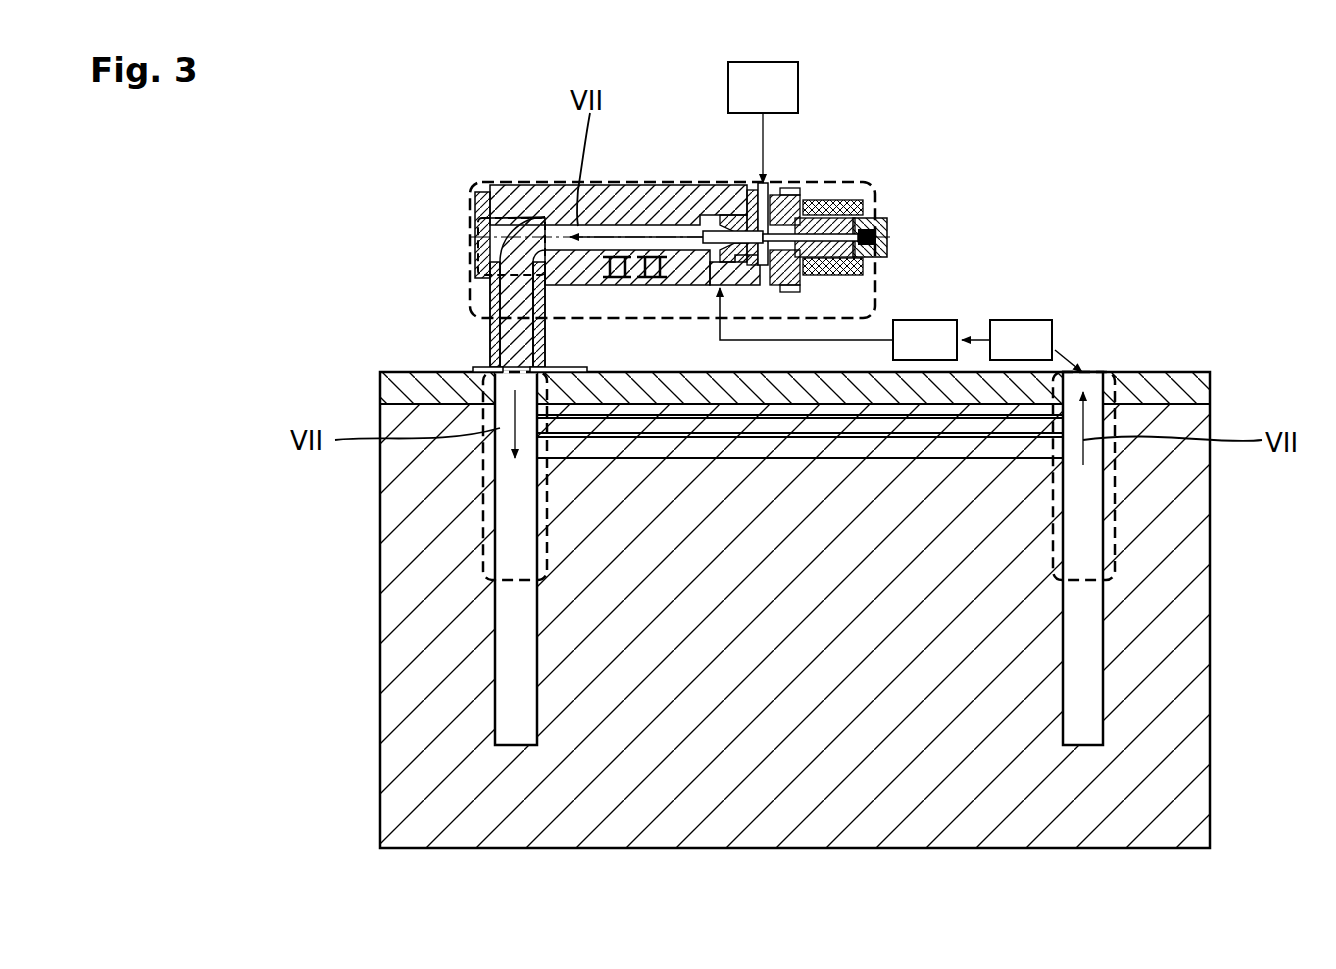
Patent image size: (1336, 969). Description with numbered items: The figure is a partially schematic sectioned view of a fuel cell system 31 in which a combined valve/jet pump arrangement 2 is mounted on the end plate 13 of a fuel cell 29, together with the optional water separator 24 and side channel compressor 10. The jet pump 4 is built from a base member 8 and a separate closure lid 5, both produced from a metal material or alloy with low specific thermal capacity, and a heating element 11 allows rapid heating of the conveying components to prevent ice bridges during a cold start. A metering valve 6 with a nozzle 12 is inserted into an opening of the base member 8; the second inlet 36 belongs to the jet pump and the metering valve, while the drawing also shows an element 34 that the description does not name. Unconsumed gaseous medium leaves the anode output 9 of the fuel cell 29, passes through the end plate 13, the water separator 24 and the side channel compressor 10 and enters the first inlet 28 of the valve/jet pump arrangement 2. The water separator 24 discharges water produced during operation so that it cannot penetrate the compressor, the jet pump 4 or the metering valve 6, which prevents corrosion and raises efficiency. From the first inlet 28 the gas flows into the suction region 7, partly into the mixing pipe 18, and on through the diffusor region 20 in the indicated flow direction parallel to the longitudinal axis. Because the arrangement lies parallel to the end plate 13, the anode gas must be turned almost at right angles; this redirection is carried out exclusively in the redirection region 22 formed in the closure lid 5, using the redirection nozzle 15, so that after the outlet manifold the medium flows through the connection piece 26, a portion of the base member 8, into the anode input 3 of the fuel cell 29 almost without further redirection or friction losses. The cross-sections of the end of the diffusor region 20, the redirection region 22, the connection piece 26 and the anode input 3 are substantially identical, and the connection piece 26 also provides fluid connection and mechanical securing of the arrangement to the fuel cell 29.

The valve/jet pump arrangement 2 is at (465, 297).
The anode input 3 is at (478, 540).
The jet pump 4 is at (750, 278).
The closure lid 5 is at (480, 200).
The metering valve 6 is at (890, 222).
The suction region 7 is at (688, 217).
The base member 8 is at (490, 186).
The anode output 9 is at (1124, 521).
The side channel compressor 10 is at (932, 320).
The heating element 11 is at (623, 286).
The nozzle 12 is at (705, 230).
The end plate 13 is at (390, 383).
The redirection nozzle 15 is at (497, 232).
The mixing pipe 18 is at (636, 222).
The diffusor region 20 is at (559, 217).
The redirection region 22 is at (470, 256).
The water separator 24 is at (1028, 320).
The connection piece 26 is at (493, 337).
The first inlet 28 is at (707, 273).
The fuel cell 29 is at (390, 770).
The fuel cell system 31 is at (385, 148).
The power supply 34 is at (798, 87).
The second inlet 36 is at (750, 192).